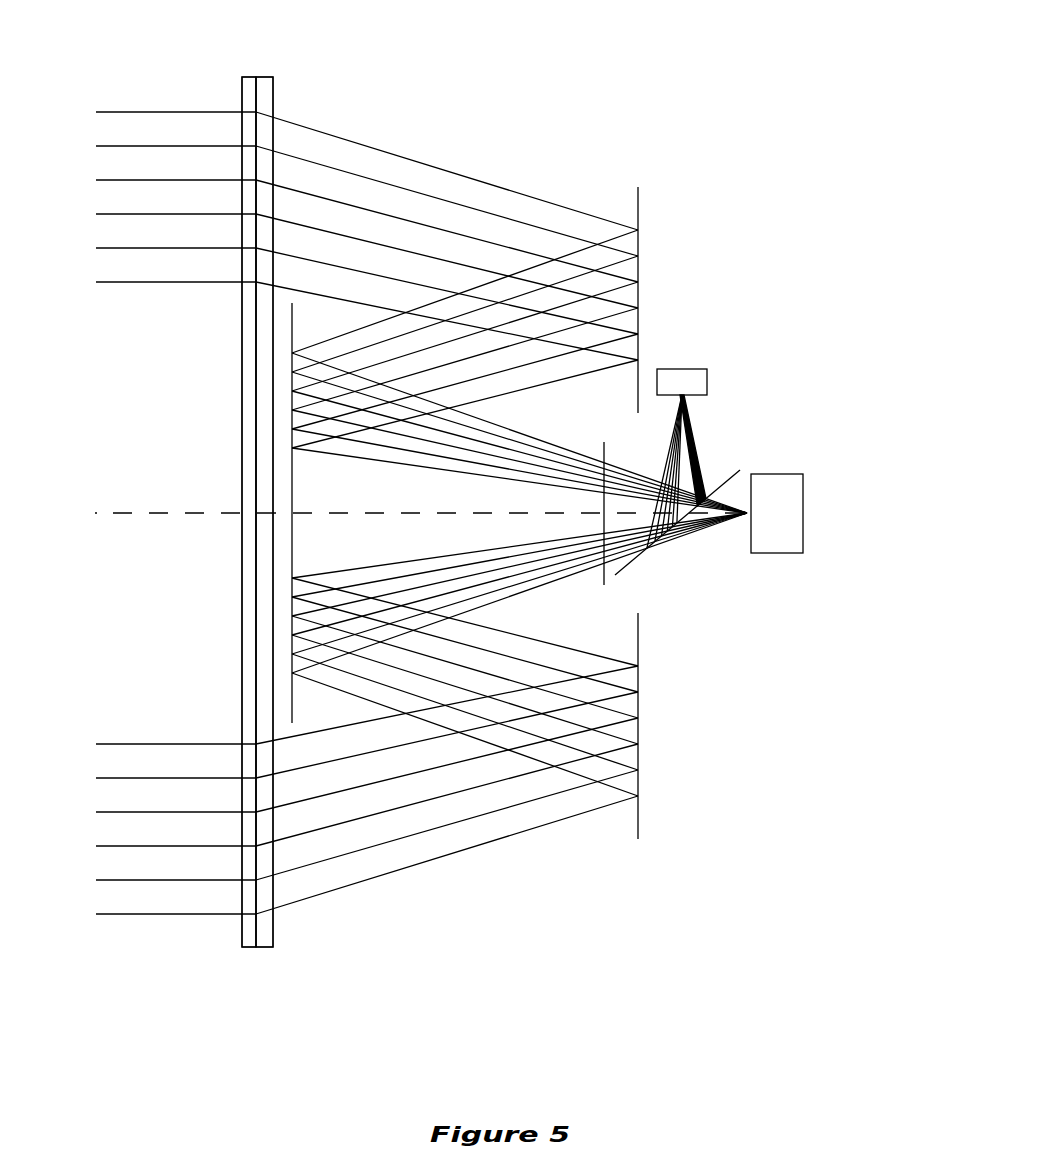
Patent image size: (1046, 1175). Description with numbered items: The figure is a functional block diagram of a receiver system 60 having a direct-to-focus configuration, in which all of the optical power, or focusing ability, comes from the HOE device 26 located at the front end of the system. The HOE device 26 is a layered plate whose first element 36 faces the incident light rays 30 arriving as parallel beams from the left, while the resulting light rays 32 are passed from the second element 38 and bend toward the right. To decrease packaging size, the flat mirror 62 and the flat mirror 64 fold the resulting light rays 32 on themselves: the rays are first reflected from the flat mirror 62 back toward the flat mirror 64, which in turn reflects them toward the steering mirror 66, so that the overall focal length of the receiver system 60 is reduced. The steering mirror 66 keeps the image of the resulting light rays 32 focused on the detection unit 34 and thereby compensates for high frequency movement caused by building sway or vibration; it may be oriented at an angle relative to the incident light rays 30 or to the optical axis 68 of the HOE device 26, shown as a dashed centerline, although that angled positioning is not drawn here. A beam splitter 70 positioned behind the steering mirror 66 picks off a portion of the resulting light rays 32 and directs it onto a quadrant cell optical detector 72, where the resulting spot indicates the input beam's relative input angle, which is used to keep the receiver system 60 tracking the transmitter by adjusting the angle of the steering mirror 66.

The HOE device 26 is at (285, 508).
The incident light rays 30 is at (158, 513).
The resulting light rays 32 is at (469, 149).
The detection unit 34 is at (822, 513).
The first element 36 is at (247, 948).
The second element 38 is at (265, 948).
The receiver system 60 is at (764, 90).
The flat mirror 62 is at (656, 792).
The flat mirror 64 is at (306, 558).
The steering mirror 66 is at (628, 466).
The optical axis 68 is at (403, 513).
The beam splitter 70 is at (667, 564).
The quadrant cell optical detector 72 is at (727, 357).